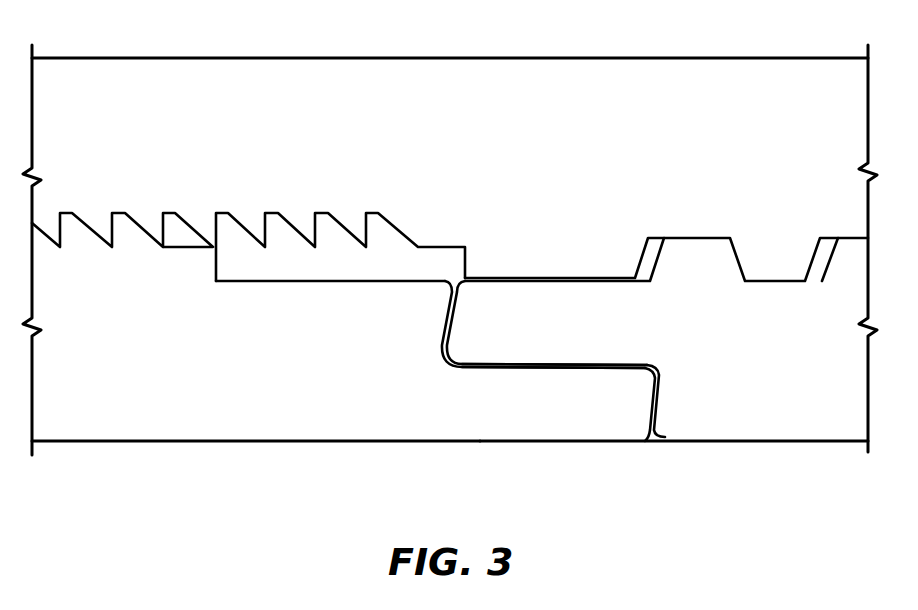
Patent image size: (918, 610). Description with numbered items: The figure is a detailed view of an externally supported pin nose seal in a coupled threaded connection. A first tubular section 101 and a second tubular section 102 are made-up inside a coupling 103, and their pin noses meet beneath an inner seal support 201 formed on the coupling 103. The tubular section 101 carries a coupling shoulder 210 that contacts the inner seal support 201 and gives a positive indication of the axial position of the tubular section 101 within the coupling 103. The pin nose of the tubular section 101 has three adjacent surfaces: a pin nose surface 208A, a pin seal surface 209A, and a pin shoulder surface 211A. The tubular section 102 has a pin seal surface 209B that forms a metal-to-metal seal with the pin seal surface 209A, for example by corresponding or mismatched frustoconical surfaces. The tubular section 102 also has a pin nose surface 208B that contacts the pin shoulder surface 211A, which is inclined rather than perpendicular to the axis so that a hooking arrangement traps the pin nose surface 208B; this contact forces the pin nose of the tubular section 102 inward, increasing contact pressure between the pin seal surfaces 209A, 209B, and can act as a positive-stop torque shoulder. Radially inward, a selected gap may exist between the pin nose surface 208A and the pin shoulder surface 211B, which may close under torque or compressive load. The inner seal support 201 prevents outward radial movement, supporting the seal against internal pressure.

The coupling 103 is at (228, 58).
The tubular section 101 is at (200, 444).
The tubular section 102 is at (770, 442).
The coupling shoulder 210 is at (217, 262).
The inner seal support 201 is at (540, 277).
The pin shoulder surface 211A is at (455, 307).
The pin nose surface 208B is at (440, 326).
The pin seal surface 209A is at (540, 369).
The pin seal surface 209B is at (556, 372).
The pin shoulder surface 211B is at (652, 422).
The pin nose surface 208A is at (657, 405).